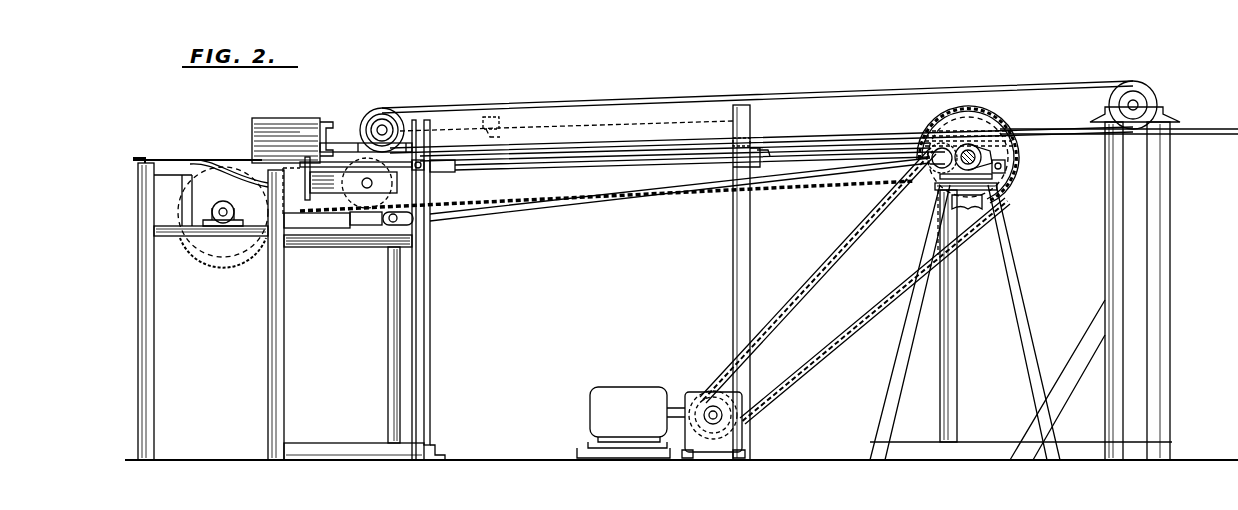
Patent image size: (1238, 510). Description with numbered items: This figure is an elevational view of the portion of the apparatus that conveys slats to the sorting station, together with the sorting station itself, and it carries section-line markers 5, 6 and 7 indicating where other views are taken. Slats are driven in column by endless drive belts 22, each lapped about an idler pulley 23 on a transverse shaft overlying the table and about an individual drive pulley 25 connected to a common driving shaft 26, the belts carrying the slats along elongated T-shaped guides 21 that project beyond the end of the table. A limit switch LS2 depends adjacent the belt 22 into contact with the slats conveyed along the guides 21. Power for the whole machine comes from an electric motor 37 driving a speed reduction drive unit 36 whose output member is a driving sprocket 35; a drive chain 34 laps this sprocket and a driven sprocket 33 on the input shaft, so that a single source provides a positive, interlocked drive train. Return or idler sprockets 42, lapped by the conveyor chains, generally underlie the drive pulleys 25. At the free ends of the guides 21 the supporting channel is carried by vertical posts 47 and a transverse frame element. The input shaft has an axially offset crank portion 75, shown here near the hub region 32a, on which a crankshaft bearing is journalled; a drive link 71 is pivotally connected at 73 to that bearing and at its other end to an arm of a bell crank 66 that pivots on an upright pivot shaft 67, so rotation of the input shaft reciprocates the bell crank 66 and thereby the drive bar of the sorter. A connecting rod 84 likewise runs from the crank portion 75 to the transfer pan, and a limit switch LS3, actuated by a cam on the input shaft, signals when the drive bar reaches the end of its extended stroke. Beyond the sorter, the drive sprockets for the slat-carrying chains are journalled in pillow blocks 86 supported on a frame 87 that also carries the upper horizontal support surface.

The T-shaped guides 21 is at (1210, 128).
The endless drive belts 22 is at (973, 91).
The idler pulleys 23 is at (1146, 96).
The drive pulleys 25 is at (388, 112).
The driving shaft 26 is at (376, 121).
The crank shaft hub 32a is at (992, 157).
The driven sprocket 33 is at (1010, 171).
The drive chain 34 is at (800, 283).
The driving sprocket 35 is at (745, 427).
The speed reduction drive unit 36 is at (690, 392).
The electric motor 37 is at (617, 388).
The return or idler sprockets 42 is at (352, 199).
The vertical posts 47 is at (426, 307).
The bell crank 66 is at (331, 229).
The upright pivot shaft 67 is at (390, 322).
The drive link 71 is at (470, 214).
The pivotal connection 73 is at (932, 166).
The crank portion 75 is at (943, 170).
The connecting rod 84 is at (513, 168).
The pillow blocks 86 is at (225, 226).
The frame 87 is at (153, 303).
The limit switch LS2 is at (503, 136).
The limit switch LS3 is at (1003, 196).
The section line 5- 5 is at (1050, 62).
The section line 6- 6 is at (884, 76).
The section line 7- 7 is at (272, 106).